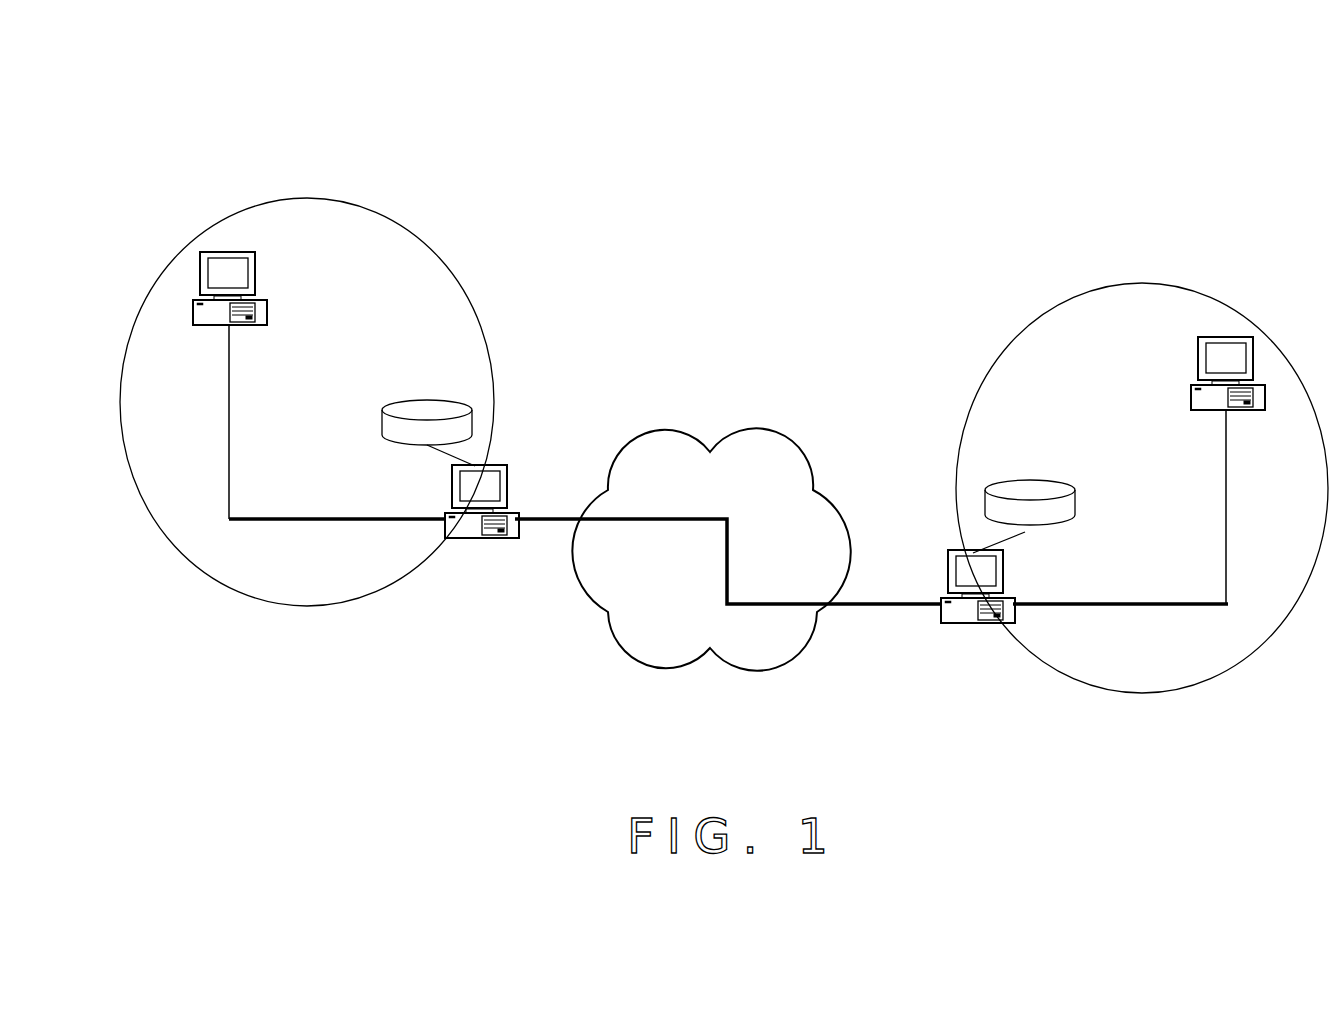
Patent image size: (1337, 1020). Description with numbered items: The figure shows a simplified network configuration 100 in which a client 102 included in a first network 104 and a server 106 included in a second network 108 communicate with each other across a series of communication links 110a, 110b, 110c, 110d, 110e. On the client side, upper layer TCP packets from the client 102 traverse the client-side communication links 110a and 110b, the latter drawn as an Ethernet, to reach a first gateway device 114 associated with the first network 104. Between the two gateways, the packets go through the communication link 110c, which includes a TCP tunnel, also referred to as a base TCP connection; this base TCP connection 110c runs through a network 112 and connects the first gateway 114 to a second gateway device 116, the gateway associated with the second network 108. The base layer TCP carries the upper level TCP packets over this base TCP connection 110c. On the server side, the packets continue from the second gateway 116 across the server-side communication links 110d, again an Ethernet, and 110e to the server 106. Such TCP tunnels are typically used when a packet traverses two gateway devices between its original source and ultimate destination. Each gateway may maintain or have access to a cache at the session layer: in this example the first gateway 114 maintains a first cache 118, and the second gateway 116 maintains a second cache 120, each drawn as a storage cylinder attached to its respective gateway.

The simplified network configuration 100 is at (957, 140).
The client 102 is at (268, 306).
The first network 104 is at (323, 198).
The server 106 is at (1187, 390).
The second network 108 is at (1155, 283).
The client-side communication link 110a is at (229, 413).
The client-side communication link 110b is at (283, 518).
The base TCP connection 110c is at (729, 533).
The server-side communication link 110d is at (1077, 603).
The server-side communication link 110e is at (1226, 497).
The network 112 is at (764, 429).
The first gateway device 114 is at (507, 481).
The second gateway device 116 is at (948, 568).
The first cache 118 is at (416, 396).
The second cache 120 is at (1040, 480).